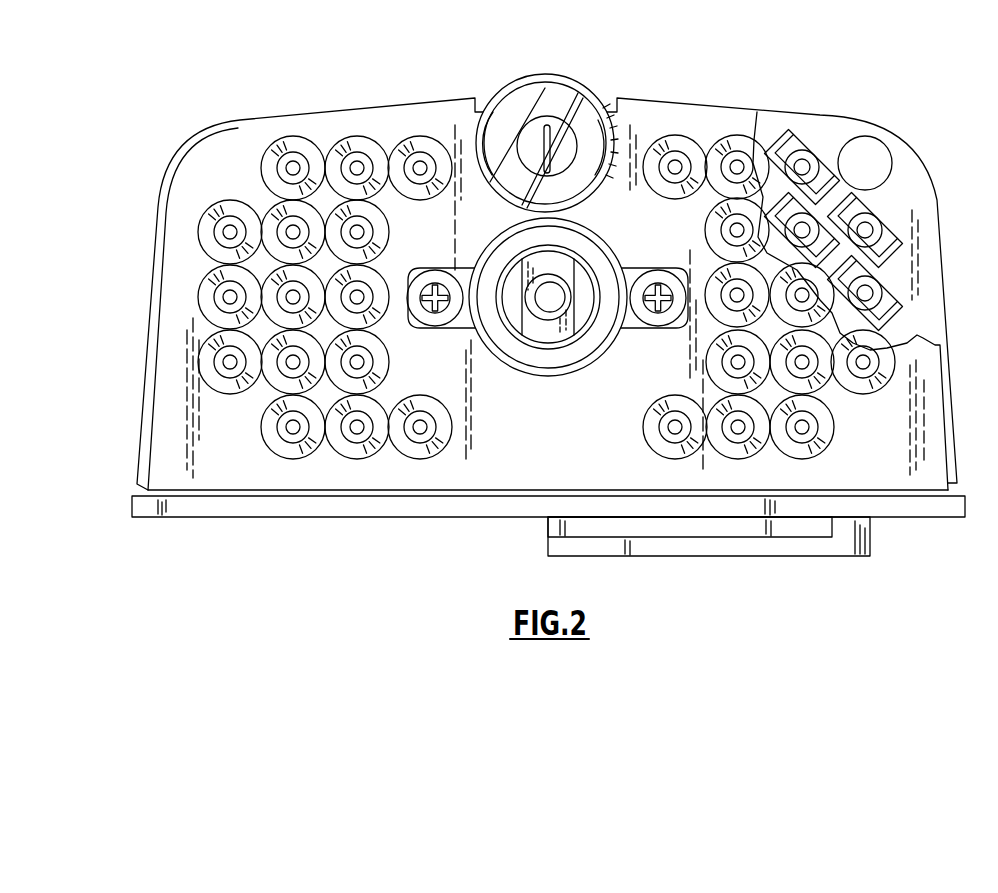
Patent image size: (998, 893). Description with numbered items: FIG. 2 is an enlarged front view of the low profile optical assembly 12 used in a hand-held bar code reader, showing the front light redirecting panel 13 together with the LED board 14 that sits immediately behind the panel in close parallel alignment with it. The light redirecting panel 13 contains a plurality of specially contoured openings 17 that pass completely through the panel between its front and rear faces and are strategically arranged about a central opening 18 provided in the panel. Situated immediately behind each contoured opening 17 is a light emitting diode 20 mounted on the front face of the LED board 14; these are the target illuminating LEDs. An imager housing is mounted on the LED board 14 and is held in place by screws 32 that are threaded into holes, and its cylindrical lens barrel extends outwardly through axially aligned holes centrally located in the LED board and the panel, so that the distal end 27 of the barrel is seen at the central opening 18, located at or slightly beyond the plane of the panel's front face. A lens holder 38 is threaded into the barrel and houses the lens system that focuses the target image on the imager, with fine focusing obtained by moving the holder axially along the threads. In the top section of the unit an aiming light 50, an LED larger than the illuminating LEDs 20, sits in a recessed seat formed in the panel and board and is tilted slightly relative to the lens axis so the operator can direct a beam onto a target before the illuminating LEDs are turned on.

The optical assembly 12 is at (548, 278).
The light redirecting panel 13 is at (313, 97).
The LED board 14 is at (812, 130).
The contoured openings 17 is at (418, 136).
The central opening 18 is at (542, 355).
The light emitting diode 20 is at (784, 130).
The distal end of the lens barrel 27 is at (555, 329).
The screws 32 is at (435, 320).
The lens holder 38 is at (582, 340).
The aiming light 50 is at (567, 76).